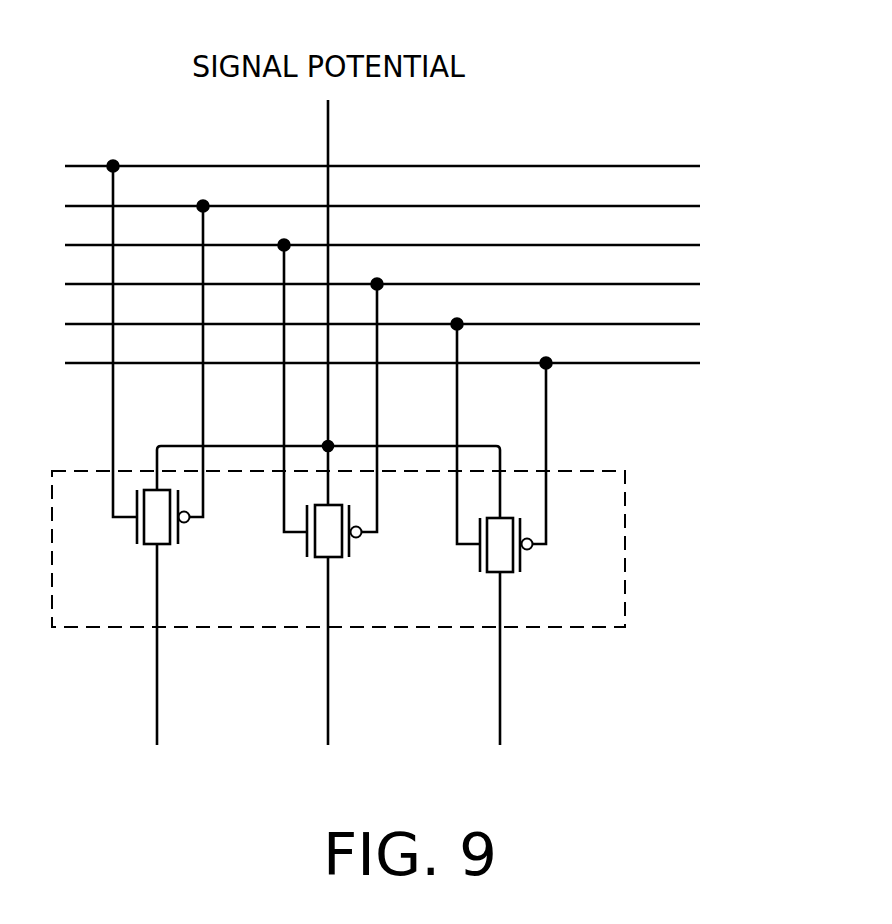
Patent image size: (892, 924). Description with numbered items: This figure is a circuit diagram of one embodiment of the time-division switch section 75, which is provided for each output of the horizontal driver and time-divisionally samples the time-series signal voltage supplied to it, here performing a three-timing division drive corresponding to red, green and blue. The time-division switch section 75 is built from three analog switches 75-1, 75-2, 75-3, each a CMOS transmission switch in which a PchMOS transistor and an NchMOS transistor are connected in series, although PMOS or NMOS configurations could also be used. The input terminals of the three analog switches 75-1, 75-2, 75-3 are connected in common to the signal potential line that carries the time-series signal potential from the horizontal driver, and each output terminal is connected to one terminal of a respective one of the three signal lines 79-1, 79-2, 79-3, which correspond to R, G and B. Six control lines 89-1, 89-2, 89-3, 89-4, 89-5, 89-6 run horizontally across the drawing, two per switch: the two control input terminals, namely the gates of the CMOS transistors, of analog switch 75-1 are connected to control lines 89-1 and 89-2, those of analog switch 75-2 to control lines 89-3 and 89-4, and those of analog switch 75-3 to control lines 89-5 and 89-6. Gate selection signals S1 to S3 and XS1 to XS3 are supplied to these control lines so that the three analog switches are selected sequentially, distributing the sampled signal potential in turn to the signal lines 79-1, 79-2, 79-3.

The control line 89-1 is at (582, 166).
The control line 89-2 is at (582, 206).
The control line 89-3 is at (582, 245).
The control line 89-4 is at (582, 284).
The control line 89-5 is at (582, 324).
The control line 89-6 is at (582, 363).
The time-division switch section 75 is at (571, 471).
The analog switch 75-1 is at (124, 546).
The analog switch 75-2 is at (294, 549).
The analog switch 75-3 is at (469, 558).
The signal line 79-1 is at (157, 697).
The signal line 79-2 is at (328, 700).
The signal line 79-3 is at (500, 700).